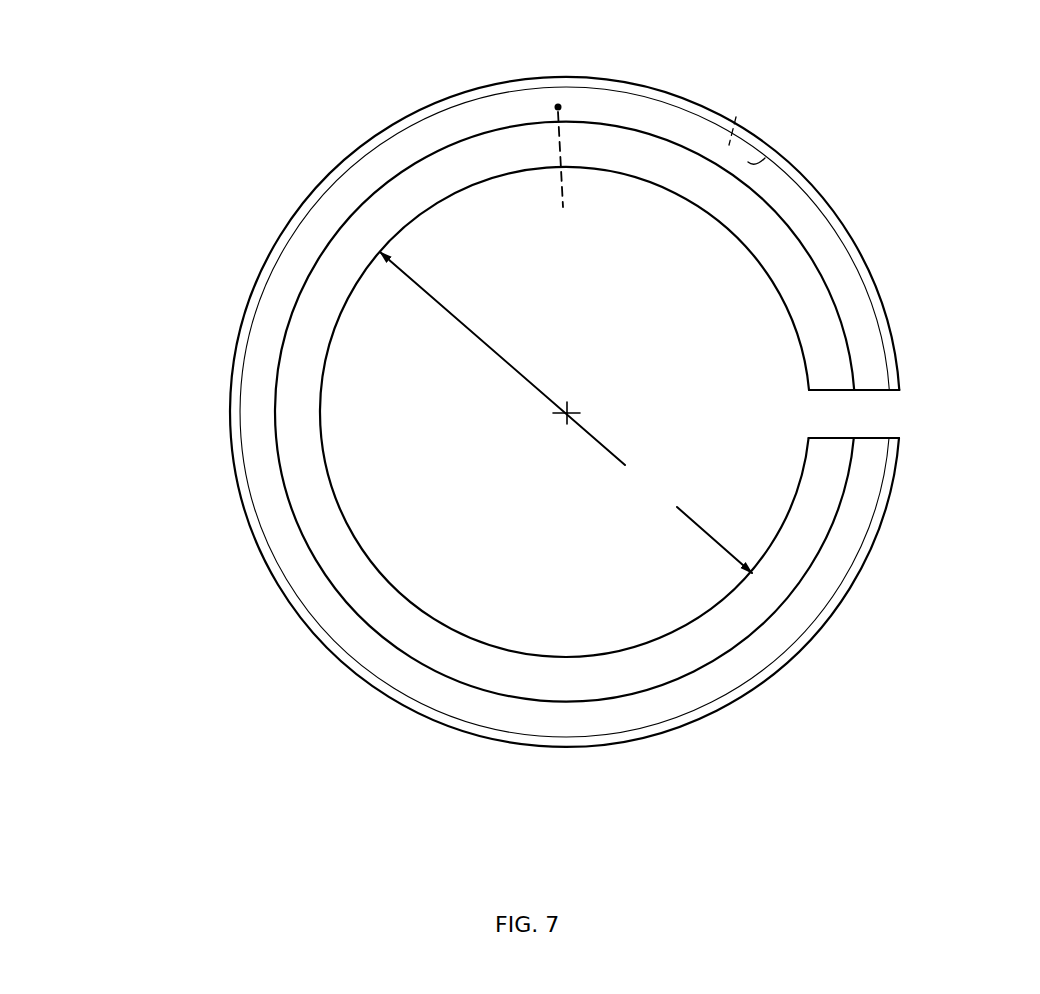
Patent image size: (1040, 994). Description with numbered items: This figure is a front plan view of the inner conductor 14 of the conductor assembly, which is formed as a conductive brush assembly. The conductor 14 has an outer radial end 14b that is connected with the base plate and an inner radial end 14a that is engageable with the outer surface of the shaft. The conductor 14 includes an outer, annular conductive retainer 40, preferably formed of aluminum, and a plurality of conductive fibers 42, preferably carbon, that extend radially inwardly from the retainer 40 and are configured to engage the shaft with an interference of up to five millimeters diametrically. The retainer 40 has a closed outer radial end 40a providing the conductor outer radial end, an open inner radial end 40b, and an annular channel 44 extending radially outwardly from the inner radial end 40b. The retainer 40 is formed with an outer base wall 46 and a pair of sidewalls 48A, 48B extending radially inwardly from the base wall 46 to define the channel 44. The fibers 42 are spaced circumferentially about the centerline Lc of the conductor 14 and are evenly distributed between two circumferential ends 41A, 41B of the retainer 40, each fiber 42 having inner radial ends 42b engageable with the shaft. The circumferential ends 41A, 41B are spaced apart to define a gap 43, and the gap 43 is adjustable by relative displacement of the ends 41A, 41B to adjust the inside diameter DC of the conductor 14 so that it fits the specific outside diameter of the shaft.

The inner conductor 14 is at (585, 384).
The inner radial end of the conductor 14a is at (507, 185).
The outer radial end of the conductor 14b is at (446, 90).
The annular conductive retainer 40 is at (628, 398).
The closed outer radial end of the retainer 40a is at (879, 269).
The open inner radial end of the retainer 40b is at (826, 300).
The first circumferential end of the retainer 41A is at (884, 390).
The second circumferential end of the retainer 41B is at (881, 440).
The conductive fibers 42 is at (564, 412).
The inner radial ends of the conductive fibers 42b is at (449, 197).
The gap 43 is at (838, 414).
The annular channel 44 is at (567, 175).
The outer base wall 46 is at (710, 102).
The first sidewall 48A is at (748, 162).
The second sidewall 48B is at (742, 108).
The centerline Lc is at (573, 403).
The inside diameter of the conductor DC is at (566, 412).